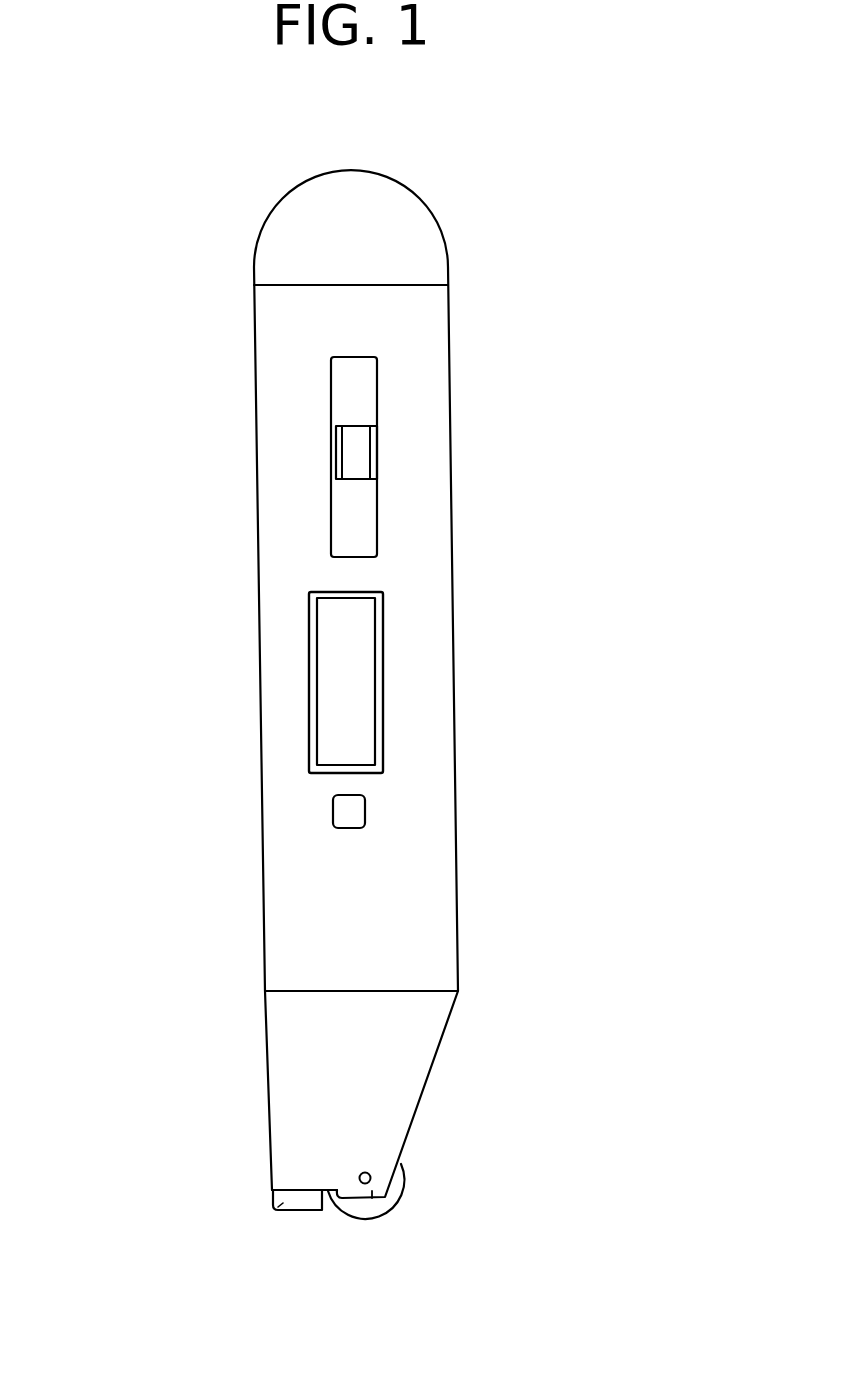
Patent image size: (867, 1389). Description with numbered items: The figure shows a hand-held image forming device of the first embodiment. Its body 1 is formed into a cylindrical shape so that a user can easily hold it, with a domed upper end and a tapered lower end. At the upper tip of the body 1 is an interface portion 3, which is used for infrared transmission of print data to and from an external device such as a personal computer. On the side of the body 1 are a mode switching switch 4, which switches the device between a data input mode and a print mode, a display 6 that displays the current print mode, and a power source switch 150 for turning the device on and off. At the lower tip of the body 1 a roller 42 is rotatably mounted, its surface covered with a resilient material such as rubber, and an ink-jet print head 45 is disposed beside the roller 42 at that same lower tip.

The body 1 is at (392, 733).
The interface portion 3 is at (375, 249).
The mode switching switch 4 is at (360, 446).
The display 6 is at (337, 653).
The power source switch 150 is at (444, 830).
The roller 42 is at (402, 1180).
The ink-jet print head 45 is at (273, 1212).